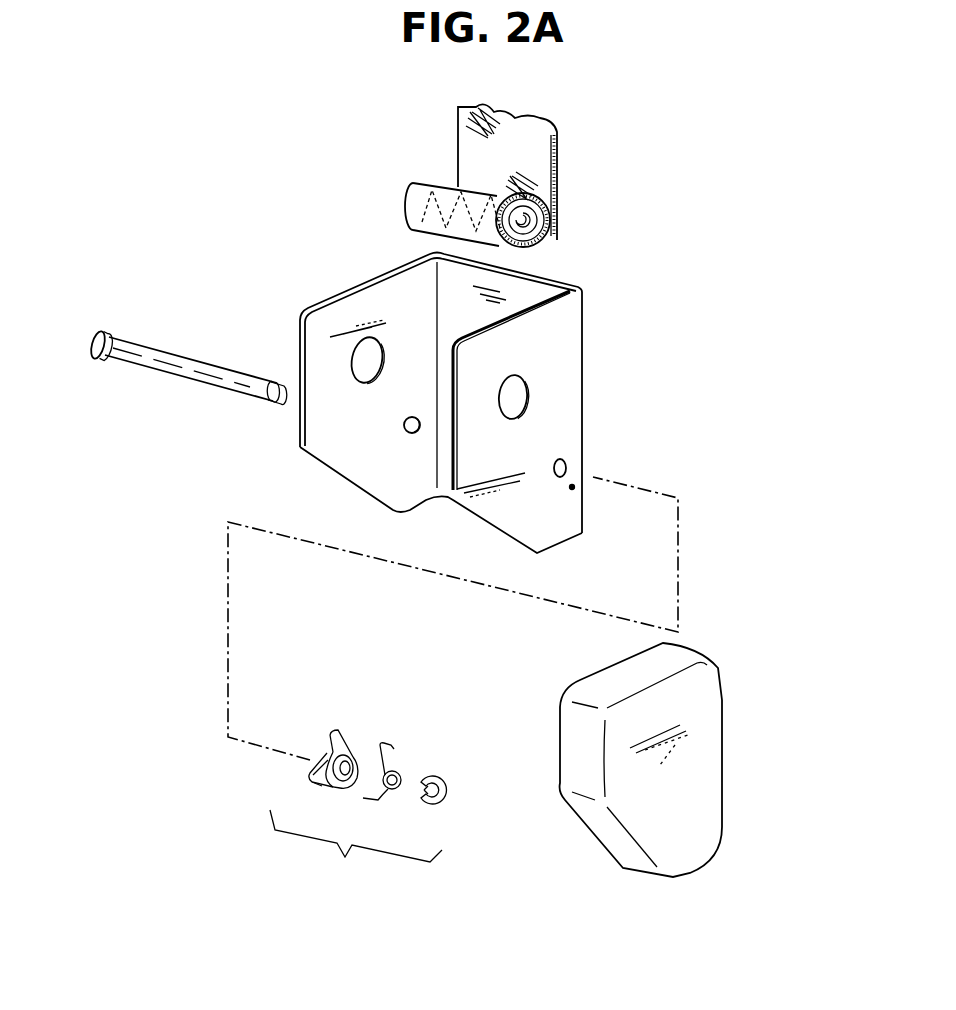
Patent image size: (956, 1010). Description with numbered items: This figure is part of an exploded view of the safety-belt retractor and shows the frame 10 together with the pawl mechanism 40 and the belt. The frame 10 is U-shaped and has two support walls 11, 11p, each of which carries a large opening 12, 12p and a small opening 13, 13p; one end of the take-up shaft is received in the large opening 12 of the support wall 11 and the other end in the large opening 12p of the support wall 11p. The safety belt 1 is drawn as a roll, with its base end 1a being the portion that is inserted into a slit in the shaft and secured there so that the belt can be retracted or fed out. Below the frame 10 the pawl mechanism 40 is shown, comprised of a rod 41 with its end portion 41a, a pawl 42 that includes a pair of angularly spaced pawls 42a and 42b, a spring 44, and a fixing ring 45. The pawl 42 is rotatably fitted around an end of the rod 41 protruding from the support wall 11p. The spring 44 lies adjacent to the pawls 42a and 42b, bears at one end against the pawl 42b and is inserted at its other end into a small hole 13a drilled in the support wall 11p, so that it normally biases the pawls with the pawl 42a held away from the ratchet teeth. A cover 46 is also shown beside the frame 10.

The safety belt 1 is at (462, 133).
The base end of the belt 1a is at (522, 218).
The frame 10 is at (464, 361).
The support wall 11 is at (380, 277).
The support wall 11p is at (570, 312).
The large opening 12 is at (362, 338).
The large opening 12p is at (530, 397).
The small opening 13 is at (405, 432).
The small opening 13p is at (567, 463).
The small hole 13a is at (573, 489).
The pawl mechanism 40 is at (387, 788).
The rod 41 is at (183, 380).
The rod groove 41a is at (272, 402).
The pawl 42 is at (325, 756).
The pawl 42a is at (317, 785).
The pawl 42b is at (335, 730).
The spring 44 is at (393, 752).
The fixing ring 45 is at (447, 782).
The cover 46 is at (617, 673).